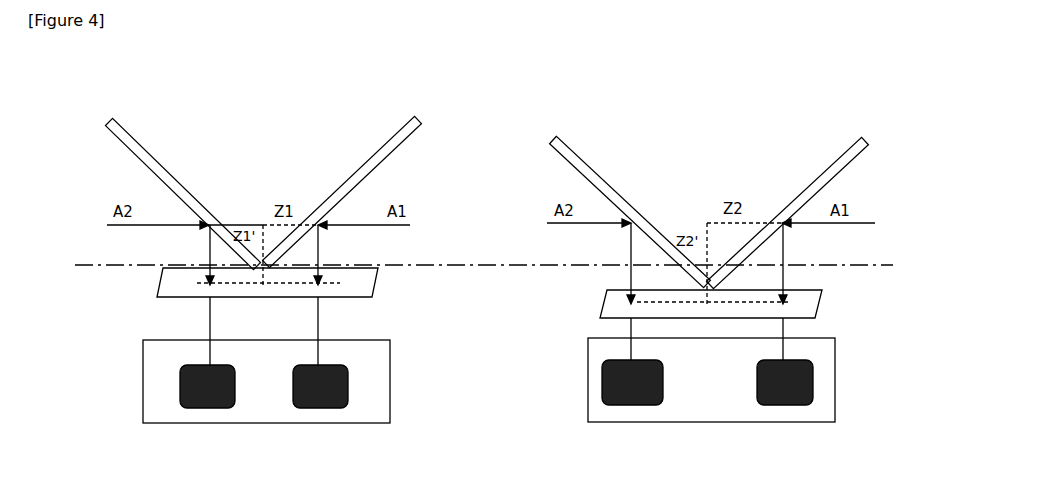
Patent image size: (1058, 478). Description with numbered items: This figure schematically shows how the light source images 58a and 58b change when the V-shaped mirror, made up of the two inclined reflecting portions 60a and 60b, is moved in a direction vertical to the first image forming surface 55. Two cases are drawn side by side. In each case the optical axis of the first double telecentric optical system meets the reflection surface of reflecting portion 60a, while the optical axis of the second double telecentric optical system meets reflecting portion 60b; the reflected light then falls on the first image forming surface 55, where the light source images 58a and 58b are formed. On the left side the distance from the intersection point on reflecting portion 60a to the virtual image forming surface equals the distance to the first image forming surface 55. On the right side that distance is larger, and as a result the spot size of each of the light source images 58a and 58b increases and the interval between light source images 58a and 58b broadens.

The first image forming surface 55 is at (150, 392).
The light source image 58a is at (325, 408).
The light source image 58b is at (213, 408).
The reflecting portion 60a is at (419, 119).
The reflecting portion 60b is at (107, 120).